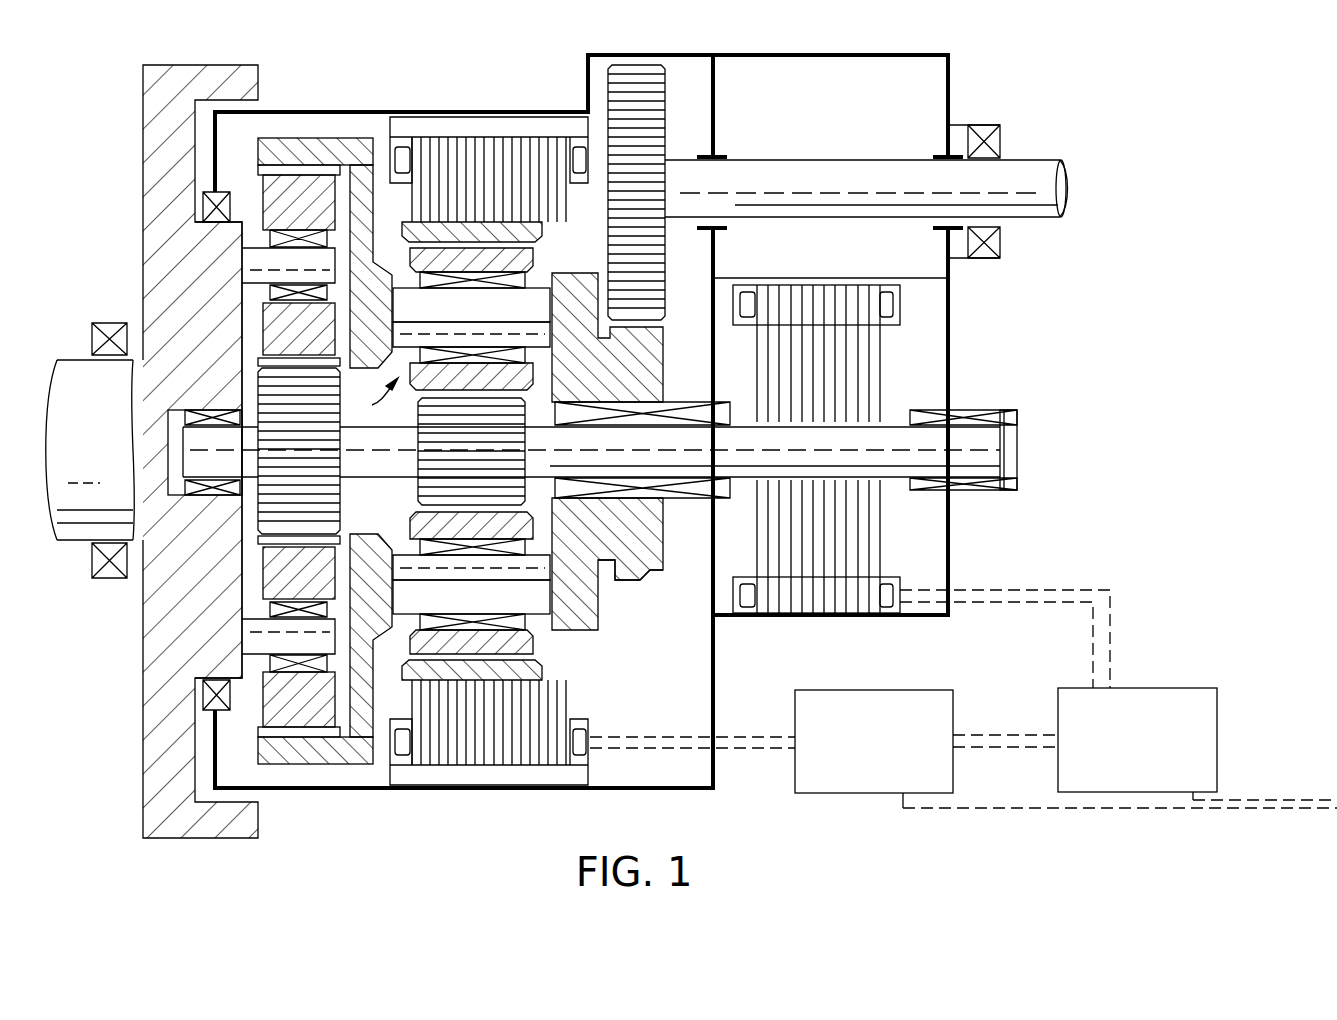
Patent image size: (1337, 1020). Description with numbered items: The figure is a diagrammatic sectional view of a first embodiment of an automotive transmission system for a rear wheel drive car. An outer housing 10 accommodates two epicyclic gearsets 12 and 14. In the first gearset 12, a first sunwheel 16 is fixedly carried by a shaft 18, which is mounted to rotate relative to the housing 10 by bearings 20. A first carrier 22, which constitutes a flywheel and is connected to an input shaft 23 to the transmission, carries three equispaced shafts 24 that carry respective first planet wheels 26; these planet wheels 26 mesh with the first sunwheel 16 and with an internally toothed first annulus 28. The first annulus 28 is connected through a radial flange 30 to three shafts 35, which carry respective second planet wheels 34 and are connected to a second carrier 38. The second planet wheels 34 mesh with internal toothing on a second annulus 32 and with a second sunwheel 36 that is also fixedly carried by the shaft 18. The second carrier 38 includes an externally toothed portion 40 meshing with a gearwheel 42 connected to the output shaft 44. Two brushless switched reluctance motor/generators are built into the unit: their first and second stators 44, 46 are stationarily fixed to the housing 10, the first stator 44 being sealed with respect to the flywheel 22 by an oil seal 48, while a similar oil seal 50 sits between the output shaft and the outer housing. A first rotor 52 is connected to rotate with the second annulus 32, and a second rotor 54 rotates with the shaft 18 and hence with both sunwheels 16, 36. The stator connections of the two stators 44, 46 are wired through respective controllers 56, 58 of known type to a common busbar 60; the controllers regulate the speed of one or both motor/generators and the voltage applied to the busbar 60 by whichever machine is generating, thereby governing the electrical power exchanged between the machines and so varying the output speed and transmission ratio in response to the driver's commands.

The outer housing 10 is at (315, 790).
The first epicyclic gearset 12 is at (354, 485).
The second epicyclic gearset 14 is at (371, 398).
The first sunwheel 16 is at (178, 600).
The shaft 18 is at (960, 432).
The bearings 20 is at (975, 487).
The first carrier 22 is at (220, 302).
The input shaft 23 is at (87, 522).
The shafts 24 is at (250, 258).
The first planet wheels 26 is at (278, 332).
The first annulus 28 is at (303, 140).
The radial flange 30 is at (368, 180).
The second annulus 32 is at (513, 230).
The second planet wheels 34 is at (467, 260).
The shafts 35 is at (533, 302).
The second sunwheel 36 is at (467, 415).
The second carrier 38 is at (588, 598).
The externally toothed portion 40 is at (638, 562).
The gearwheel 42 is at (643, 78).
The output shaft / first stator 44 is at (515, 147).
The second stator 46 is at (815, 605).
The oil seal 48 is at (202, 200).
The oil seal 50 is at (987, 128).
The first rotor 52 is at (573, 205).
The second rotor 54 is at (868, 505).
The controller 56 is at (850, 795).
The controller 58 is at (1165, 688).
The busbar 60 is at (1000, 735).